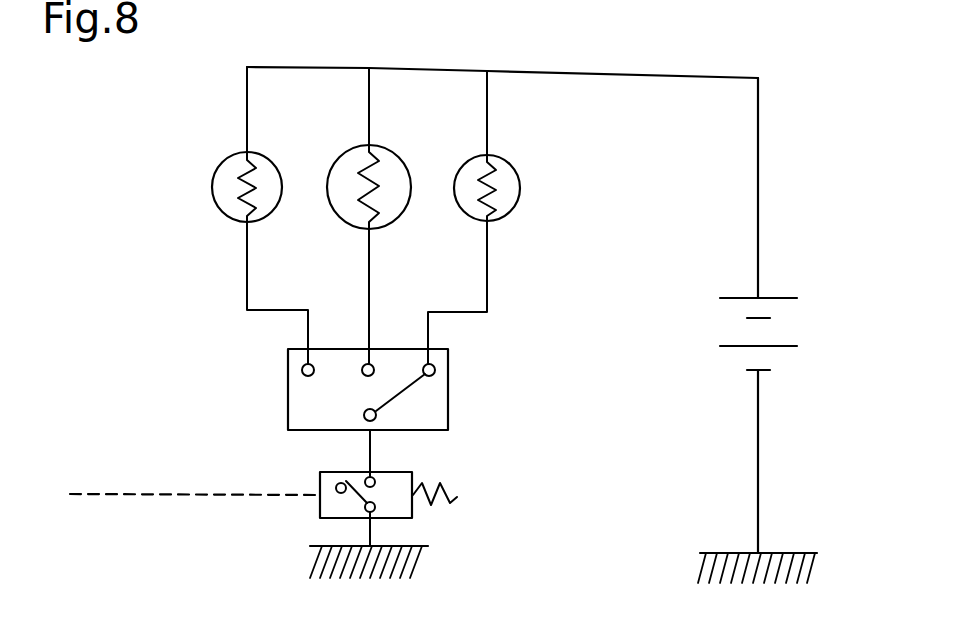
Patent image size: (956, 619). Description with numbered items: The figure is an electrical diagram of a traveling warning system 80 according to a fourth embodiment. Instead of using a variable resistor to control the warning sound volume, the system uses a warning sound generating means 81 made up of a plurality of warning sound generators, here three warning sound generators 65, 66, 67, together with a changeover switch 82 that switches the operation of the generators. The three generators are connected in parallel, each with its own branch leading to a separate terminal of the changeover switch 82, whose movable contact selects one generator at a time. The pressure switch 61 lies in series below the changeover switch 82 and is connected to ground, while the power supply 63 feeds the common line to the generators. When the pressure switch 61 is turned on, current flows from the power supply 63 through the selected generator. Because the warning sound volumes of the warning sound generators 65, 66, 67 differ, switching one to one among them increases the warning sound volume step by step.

The pressure switch 61 is at (320, 512).
The power supply 63 is at (737, 298).
The warning sound generator 65 is at (515, 166).
The warning sound generator 66 is at (399, 152).
The warning sound generator 67 is at (274, 164).
The traveling warning system 80 is at (172, 246).
The warning sound generating means 81 is at (519, 336).
The changeover switch 82 is at (448, 398).